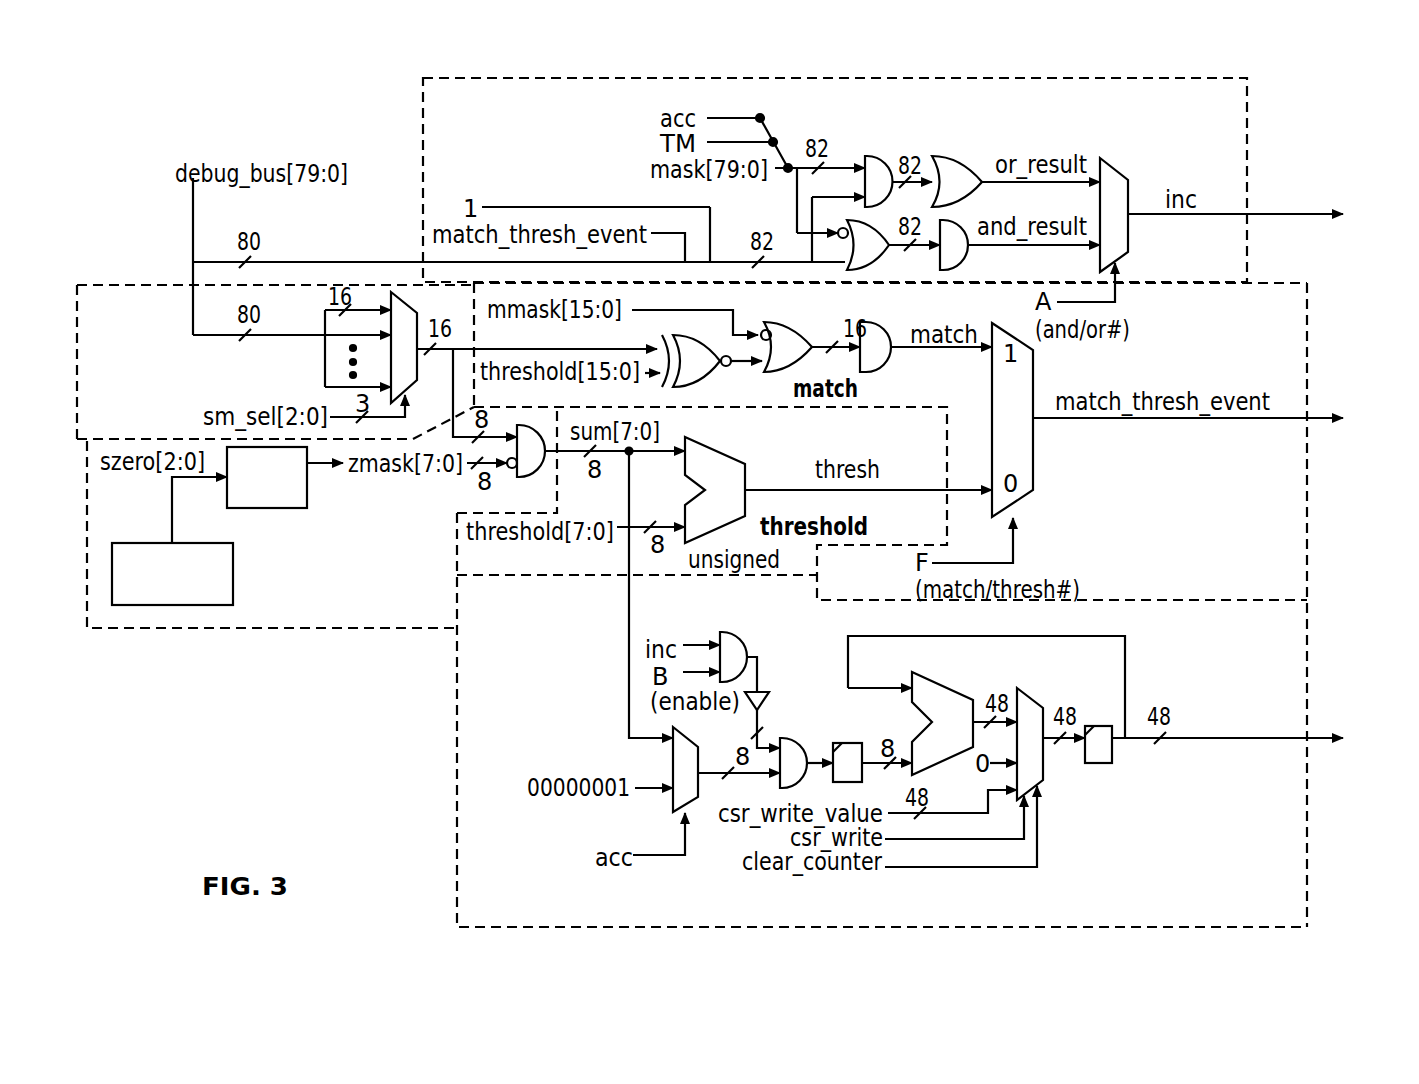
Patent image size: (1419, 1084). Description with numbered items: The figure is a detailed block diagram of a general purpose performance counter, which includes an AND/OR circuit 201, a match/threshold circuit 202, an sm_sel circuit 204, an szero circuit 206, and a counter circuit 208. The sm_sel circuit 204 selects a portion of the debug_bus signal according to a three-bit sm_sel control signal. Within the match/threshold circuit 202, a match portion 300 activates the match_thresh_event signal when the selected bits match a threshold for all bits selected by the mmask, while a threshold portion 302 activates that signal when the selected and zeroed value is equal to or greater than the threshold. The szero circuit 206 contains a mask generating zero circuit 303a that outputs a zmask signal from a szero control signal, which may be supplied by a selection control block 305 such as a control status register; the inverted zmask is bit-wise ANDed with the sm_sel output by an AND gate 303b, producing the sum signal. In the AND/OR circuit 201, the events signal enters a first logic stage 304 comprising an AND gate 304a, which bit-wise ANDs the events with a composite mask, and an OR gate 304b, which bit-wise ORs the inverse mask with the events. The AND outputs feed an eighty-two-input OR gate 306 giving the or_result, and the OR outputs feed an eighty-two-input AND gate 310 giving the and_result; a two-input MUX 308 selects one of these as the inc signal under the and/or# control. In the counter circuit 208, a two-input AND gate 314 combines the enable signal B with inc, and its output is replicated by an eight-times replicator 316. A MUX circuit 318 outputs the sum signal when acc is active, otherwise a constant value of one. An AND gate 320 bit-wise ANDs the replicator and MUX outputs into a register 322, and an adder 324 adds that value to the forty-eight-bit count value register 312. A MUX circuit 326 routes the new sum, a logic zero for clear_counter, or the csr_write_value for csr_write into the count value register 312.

The AND/OR circuit 201 is at (1249, 172).
The match/threshold circuit 202 is at (1340, 361).
The sm_sel circuit 204 is at (168, 284).
The szero circuit 206 is at (220, 630).
The counter circuit 208 is at (1309, 800).
The match portion 300 is at (1260, 282).
The threshold portion 302 is at (457, 547).
The mask generating zero circuit 303a is at (267, 508).
The AND gate 303b is at (505, 478).
The first logic stage 304 is at (880, 185).
The AND gate 304a is at (866, 153).
The OR gate 304b is at (865, 262).
The selection control block 305 is at (234, 575).
The 82-input OR gate 306 is at (957, 153).
The two-input MUX 308 is at (1118, 170).
The 82-input AND gate 310 is at (970, 256).
The count value register 312 is at (1098, 763).
The two-input AND gate 314 is at (733, 632).
The 8x replicator 316 is at (770, 692).
The MUX circuit 318 is at (682, 743).
The AND gate 320 is at (783, 737).
The register 322 is at (843, 743).
The adder 324 is at (940, 675).
The MUX circuit 326 is at (1025, 695).